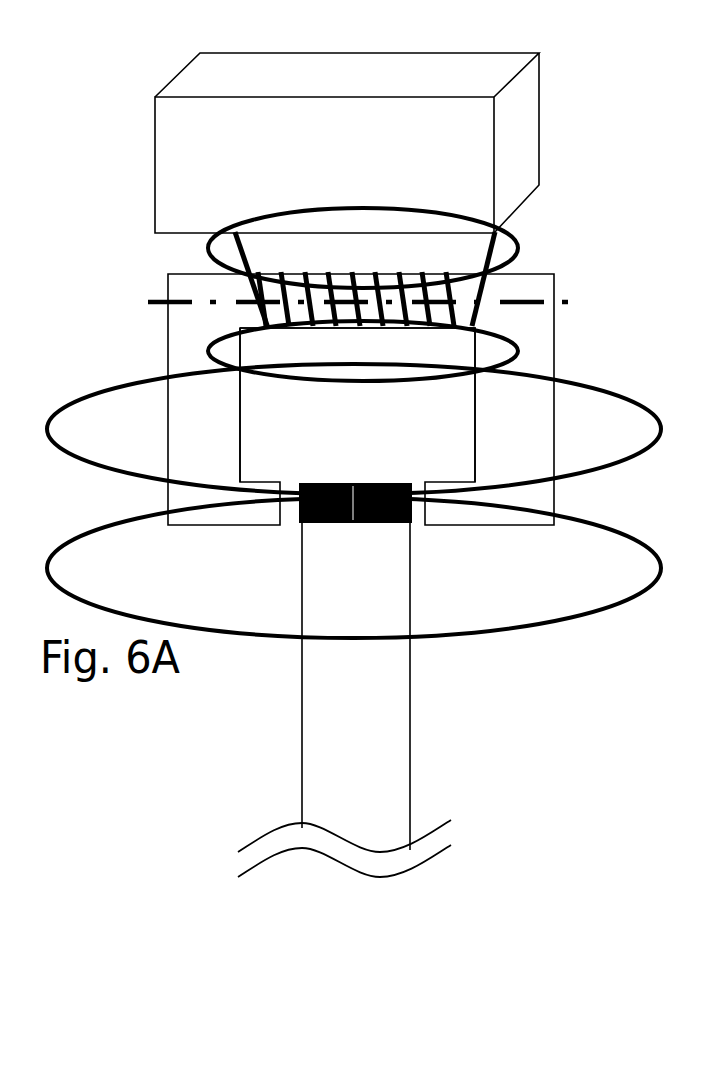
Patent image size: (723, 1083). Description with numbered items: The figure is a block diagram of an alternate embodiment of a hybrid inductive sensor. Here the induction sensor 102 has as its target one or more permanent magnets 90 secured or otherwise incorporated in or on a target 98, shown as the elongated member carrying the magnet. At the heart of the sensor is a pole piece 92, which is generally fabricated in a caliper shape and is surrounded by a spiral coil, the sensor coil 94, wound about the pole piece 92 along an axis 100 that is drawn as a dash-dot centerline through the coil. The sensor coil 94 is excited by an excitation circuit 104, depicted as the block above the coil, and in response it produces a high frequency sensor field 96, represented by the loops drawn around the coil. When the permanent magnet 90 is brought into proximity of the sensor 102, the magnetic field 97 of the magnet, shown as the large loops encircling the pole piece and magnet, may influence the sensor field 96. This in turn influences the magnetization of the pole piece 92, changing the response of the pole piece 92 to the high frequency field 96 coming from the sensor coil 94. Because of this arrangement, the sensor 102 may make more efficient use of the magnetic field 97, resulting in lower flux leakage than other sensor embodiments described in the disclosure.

The permanent magnet 90 is at (410, 522).
The pole piece 92 is at (554, 414).
The sensor coil 94 is at (505, 290).
The sensor field 96 is at (518, 245).
The magnetic field 97 is at (606, 383).
The target 98 is at (410, 583).
The axis 100 is at (150, 302).
The induction sensor 102 is at (168, 358).
The excitation circuit 104 is at (539, 111).